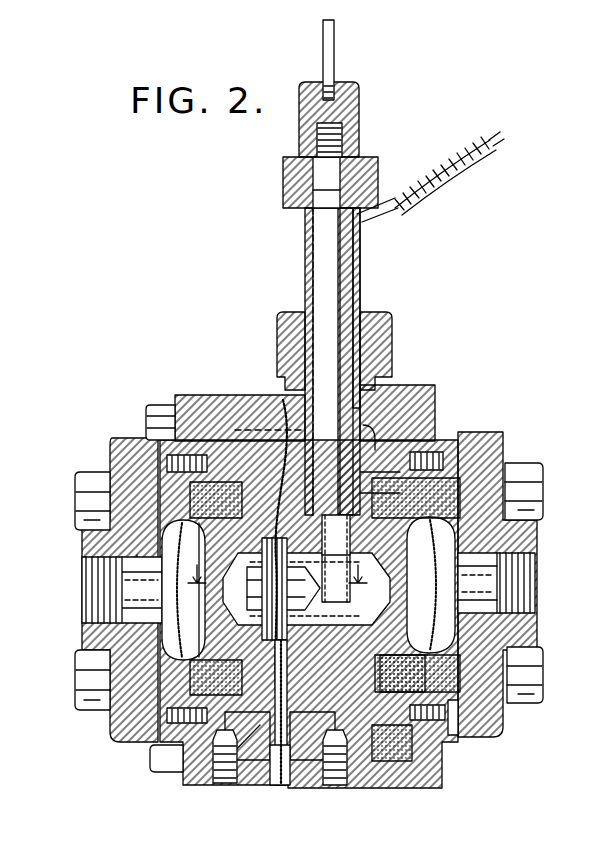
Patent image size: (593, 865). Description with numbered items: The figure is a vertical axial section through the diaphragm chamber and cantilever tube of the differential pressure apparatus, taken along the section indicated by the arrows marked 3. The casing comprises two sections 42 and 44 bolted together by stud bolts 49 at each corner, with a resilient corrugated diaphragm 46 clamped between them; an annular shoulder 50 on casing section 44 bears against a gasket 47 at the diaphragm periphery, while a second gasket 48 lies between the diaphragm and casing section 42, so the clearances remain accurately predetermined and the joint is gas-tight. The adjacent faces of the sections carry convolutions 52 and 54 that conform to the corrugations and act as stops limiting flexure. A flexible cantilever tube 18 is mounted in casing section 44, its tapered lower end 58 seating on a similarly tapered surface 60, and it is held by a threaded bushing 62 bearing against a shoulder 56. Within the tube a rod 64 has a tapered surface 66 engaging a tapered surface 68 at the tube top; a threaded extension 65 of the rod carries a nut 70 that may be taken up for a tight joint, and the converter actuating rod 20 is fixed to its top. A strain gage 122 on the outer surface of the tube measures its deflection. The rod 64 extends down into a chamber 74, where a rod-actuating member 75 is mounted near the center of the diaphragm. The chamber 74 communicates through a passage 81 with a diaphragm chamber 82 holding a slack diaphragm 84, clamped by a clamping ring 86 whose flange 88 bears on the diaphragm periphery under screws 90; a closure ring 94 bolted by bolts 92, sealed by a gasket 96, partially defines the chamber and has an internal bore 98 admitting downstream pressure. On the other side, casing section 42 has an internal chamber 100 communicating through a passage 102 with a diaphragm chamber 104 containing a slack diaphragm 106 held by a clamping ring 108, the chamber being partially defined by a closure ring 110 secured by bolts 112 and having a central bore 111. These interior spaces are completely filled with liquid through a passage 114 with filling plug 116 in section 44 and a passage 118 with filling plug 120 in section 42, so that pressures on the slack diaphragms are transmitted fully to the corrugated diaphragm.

The converter actuating rod 20 is at (335, 40).
The nut 70 is at (359, 90).
The threaded extension 65 is at (317, 130).
The tapered surface 68 is at (330, 175).
The tapered surface 66 is at (378, 173).
The strain gage 122 is at (362, 250).
The rod 64 is at (313, 287).
The flexible cantilever tube 18 is at (354, 288).
The threaded bushing 62 is at (393, 335).
The casing section 44 is at (410, 386).
The casing section 42 is at (205, 396).
The annular shoulder 50 is at (283, 400).
The stud bolts 49 is at (160, 405).
The clamping ring 108 is at (160, 442).
The corrugated diaphragm 46 is at (265, 440).
The shoulder 56 is at (365, 440).
The tapered lower end 58 is at (360, 472).
The tapered surface 60 is at (360, 493).
The gasket 96 is at (485, 468).
The bolts 92 is at (544, 475).
The bolts 112 is at (84, 500).
The closure ring 110 is at (90, 545).
The central bore 111 is at (137, 556).
The passage 102 is at (215, 566).
The passage 81 is at (395, 563).
The internal bore 98 is at (478, 556).
The slack diaphragm 106 is at (180, 590).
The section line 3 is at (277, 584).
The slack diaphragm 84 is at (432, 588).
The internal chamber 100 is at (236, 612).
The rod-actuating member 75 is at (338, 620).
The diaphragm chamber 82 is at (446, 627).
The diaphragm chamber 104 is at (172, 630).
The chamber 74 is at (340, 626).
The flange 88 is at (392, 677).
The convolutions 52 is at (268, 730).
The convolutions 54 is at (293, 730).
The clamping ring 86 is at (452, 740).
The screws 90 is at (460, 724).
The closure ring 94 is at (526, 718).
The passage 118 is at (215, 740).
The filling plug 120 is at (218, 784).
The gasket 48 is at (268, 773).
The gasket 47 is at (285, 788).
The filling plug 116 is at (340, 788).
The passage 114 is at (348, 732).